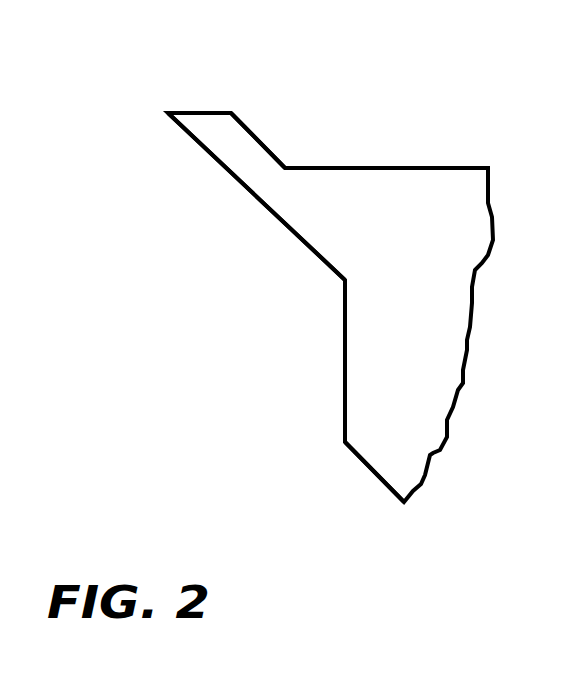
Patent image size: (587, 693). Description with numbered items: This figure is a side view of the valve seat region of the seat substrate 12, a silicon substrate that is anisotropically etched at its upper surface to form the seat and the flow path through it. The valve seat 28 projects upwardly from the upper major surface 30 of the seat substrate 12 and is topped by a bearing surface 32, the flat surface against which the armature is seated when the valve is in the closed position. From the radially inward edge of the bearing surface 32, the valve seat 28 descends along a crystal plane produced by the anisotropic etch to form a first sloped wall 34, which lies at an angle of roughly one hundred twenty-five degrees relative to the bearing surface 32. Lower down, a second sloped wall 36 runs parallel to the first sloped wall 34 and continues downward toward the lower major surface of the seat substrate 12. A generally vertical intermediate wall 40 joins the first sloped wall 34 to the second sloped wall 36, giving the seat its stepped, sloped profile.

The seat substrate 12 is at (417, 333).
The valve seat 28 is at (245, 145).
The upper major surface 30 is at (400, 167).
The bearing surface 32 is at (202, 113).
The first sloped wall 34 is at (270, 213).
The second sloped wall 36 is at (373, 473).
The intermediate wall 40 is at (345, 380).